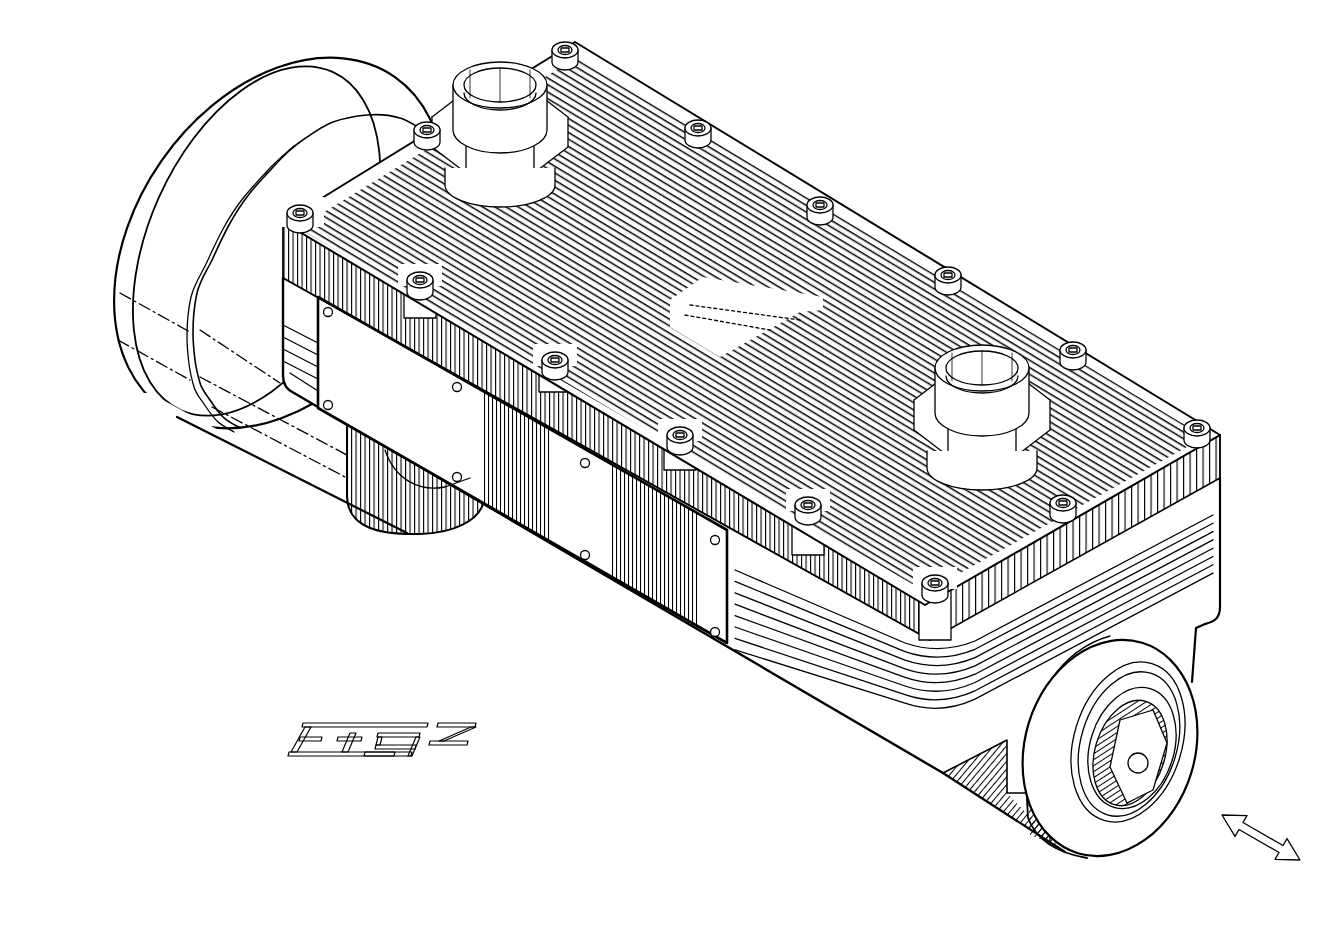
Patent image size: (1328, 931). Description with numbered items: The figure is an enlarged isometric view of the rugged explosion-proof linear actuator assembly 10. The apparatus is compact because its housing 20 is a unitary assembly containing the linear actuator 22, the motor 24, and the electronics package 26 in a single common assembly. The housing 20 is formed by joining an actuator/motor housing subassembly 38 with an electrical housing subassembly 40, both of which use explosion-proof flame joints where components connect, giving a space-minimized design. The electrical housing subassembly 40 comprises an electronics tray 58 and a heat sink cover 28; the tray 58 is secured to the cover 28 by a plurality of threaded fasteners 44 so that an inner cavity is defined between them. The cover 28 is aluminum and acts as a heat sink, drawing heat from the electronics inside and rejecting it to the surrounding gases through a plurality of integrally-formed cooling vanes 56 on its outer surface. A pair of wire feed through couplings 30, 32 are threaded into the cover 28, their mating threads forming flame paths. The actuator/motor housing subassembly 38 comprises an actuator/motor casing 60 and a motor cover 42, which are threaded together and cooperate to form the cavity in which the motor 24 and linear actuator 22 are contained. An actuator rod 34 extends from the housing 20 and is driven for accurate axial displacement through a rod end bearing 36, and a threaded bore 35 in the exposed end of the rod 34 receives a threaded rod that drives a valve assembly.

The linear actuator assembly 10 is at (676, 439).
The housing 20 is at (799, 578).
The linear actuator 22 is at (1156, 748).
The motor 24 is at (274, 279).
The electronics package 26 is at (790, 332).
The heat sink cover 28 is at (786, 152).
The wire feed through coupling 30 is at (490, 62).
The wire feed through coupling 32 is at (998, 346).
The actuator rod 34 is at (1148, 768).
The threaded bore 35 is at (1137, 813).
The rod end bearing 36 is at (1178, 688).
The actuator/motor housing subassembly 38 is at (100, 355).
The electrical housing subassembly 40 is at (1243, 423).
The motor cover 42 is at (205, 128).
The threaded fasteners 44 is at (580, 48).
The cooling vanes 56 is at (862, 246).
The electronics tray 58 is at (850, 680).
The actuator/motor casing 60 is at (420, 520).